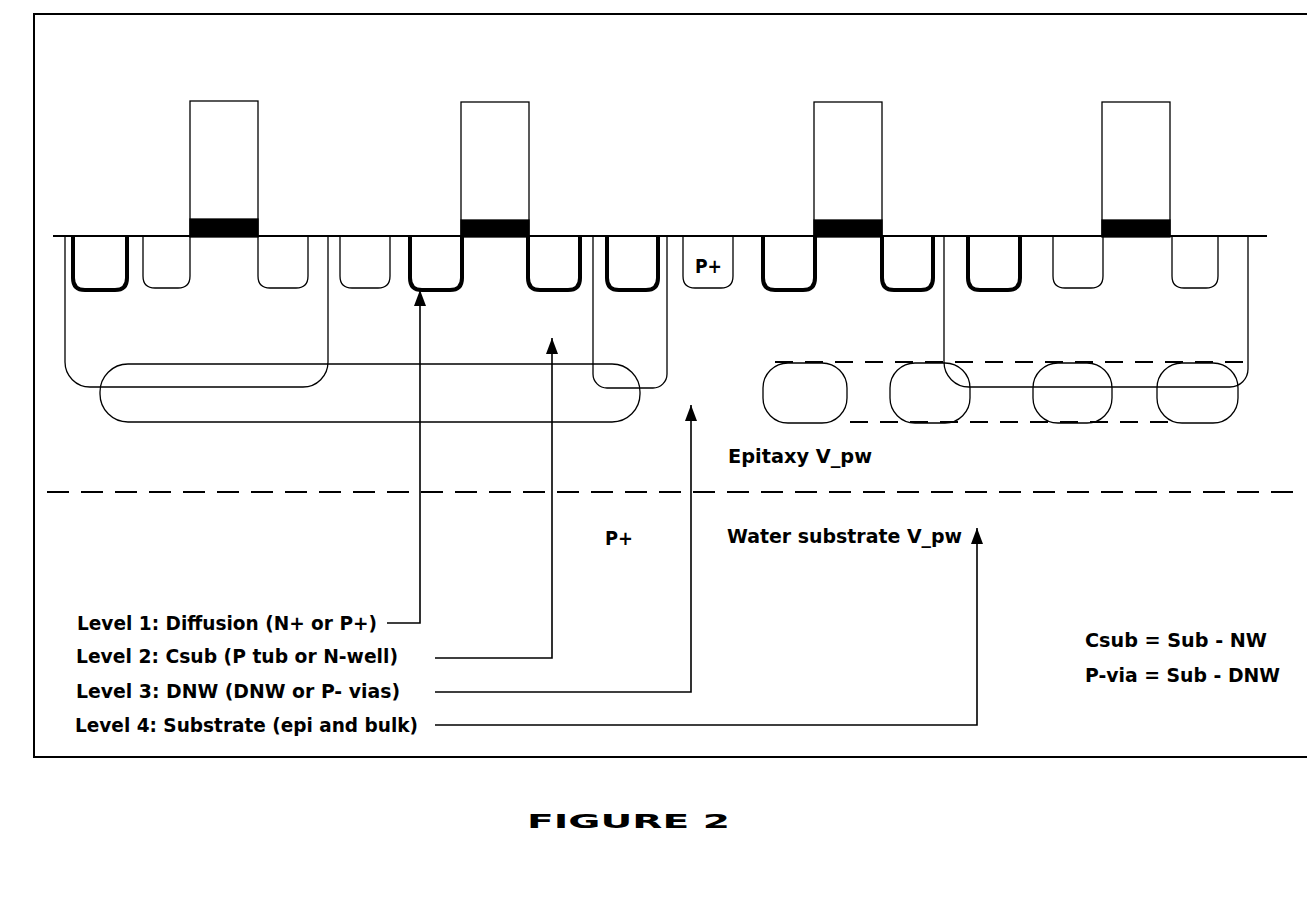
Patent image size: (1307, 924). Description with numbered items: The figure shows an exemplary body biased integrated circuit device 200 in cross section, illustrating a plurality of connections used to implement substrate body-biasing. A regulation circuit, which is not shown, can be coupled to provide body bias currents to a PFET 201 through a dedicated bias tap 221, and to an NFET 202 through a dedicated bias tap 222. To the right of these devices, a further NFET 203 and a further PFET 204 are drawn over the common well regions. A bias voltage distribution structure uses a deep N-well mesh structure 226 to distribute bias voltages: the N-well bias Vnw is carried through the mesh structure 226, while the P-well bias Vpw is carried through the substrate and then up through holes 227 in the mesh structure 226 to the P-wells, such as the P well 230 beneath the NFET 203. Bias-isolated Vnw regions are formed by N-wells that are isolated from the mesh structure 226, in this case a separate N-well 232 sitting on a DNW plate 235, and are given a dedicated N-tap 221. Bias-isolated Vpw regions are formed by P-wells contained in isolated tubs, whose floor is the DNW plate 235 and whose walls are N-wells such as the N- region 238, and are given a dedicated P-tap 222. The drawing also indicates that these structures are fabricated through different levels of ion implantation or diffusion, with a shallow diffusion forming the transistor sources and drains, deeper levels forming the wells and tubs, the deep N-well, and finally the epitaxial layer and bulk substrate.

The body biased integrated circuit device 200 is at (112, 45).
The PFET 201 is at (225, 169).
The NFET 202 is at (495, 189).
The NFET 203 is at (848, 170).
The PFET 204 is at (1136, 144).
The dedicated bias tap 221 is at (111, 222).
The dedicated bias tap 222 is at (358, 221).
The deep N-well mesh structure 226 is at (1226, 416).
The holes 227 is at (886, 426).
The P well 230 is at (851, 295).
The separate N-well 232 is at (135, 323).
The DNW plate 235 is at (187, 415).
The N- region 238 is at (650, 351).